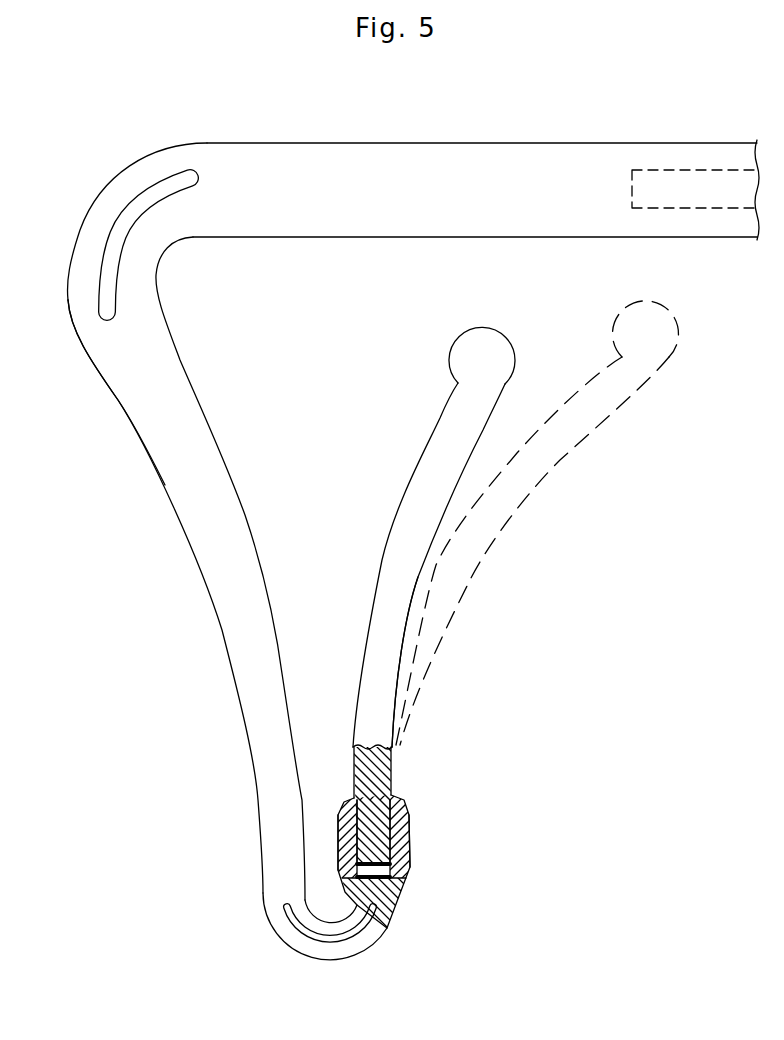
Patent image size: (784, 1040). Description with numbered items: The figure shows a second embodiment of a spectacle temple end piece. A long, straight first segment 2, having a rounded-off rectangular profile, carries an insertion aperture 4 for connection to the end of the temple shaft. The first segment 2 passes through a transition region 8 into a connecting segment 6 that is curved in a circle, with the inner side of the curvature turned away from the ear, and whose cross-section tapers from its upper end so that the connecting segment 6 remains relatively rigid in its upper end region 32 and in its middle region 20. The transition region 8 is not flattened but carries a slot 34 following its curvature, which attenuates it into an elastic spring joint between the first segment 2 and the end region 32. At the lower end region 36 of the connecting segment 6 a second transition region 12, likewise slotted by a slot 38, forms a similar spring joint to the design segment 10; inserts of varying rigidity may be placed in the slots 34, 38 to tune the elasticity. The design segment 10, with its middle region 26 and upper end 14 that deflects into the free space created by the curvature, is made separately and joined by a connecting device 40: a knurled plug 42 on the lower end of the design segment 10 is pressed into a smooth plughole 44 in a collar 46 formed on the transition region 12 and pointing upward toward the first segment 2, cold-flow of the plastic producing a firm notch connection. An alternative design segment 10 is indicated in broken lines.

The first segment 2 is at (326, 152).
The insertion aperture 4 is at (641, 178).
The connecting segment 6 is at (195, 582).
The transition region 8 is at (145, 165).
The design segment 10 is at (442, 528).
The transition region 12 is at (345, 953).
The end 14 is at (495, 352).
The middle region 20 is at (250, 545).
The middle region 26 is at (393, 662).
The end region 32 is at (137, 390).
The slot 34 is at (187, 172).
The end region 36 is at (277, 878).
The slot 38 is at (317, 942).
The connecting device 40 is at (422, 864).
The plug 42 is at (373, 788).
The plughole 44 is at (402, 888).
The collar 46 is at (407, 828).